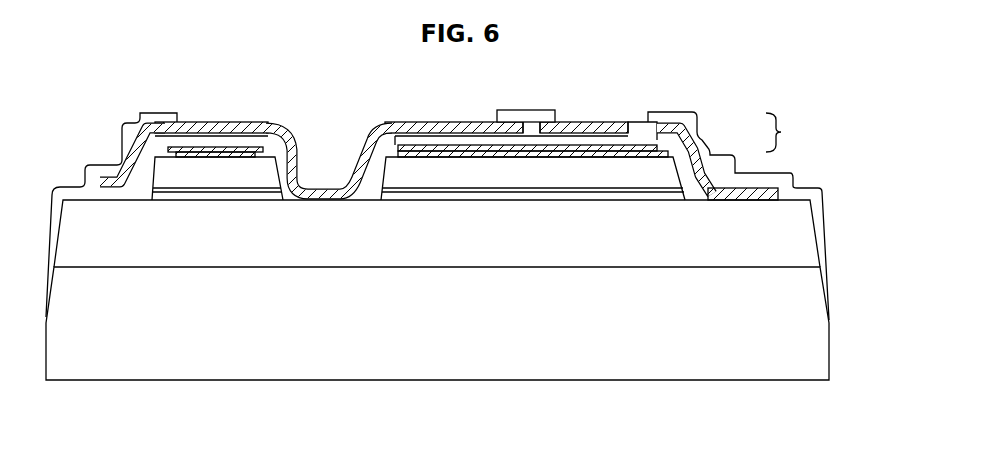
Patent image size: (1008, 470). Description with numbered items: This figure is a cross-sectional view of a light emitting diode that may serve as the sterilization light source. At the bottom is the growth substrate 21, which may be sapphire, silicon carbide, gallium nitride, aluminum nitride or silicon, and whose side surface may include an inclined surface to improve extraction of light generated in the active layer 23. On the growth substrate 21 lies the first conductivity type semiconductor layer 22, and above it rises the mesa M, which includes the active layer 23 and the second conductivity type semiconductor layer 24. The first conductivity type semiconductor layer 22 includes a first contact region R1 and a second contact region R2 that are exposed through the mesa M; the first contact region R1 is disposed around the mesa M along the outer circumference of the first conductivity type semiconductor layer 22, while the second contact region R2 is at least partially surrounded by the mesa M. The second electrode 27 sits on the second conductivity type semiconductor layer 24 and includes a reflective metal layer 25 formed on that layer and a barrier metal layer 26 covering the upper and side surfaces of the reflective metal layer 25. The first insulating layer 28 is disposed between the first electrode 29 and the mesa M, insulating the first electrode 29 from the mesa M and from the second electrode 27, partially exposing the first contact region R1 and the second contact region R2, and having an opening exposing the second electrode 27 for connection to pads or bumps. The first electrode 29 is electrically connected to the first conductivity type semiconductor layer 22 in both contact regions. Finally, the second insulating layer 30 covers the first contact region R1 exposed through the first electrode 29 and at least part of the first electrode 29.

The growth substrate 21 is at (440, 365).
The first conductivity type semiconductor layer 22 is at (803, 227).
The active layer 23 is at (677, 177).
The second conductivity type semiconductor layer 24 is at (698, 188).
The mesa M is at (786, 132).
The reflective metal layer 25 is at (575, 154).
The barrier metal layer 26 is at (625, 151).
The second electrode 27 is at (420, 299).
The first insulating layer 28 is at (415, 140).
The first electrode 29 is at (527, 127).
The second insulating layer 30 is at (513, 111).
The first contact region R1 is at (745, 203).
The second contact region R2 is at (328, 202).